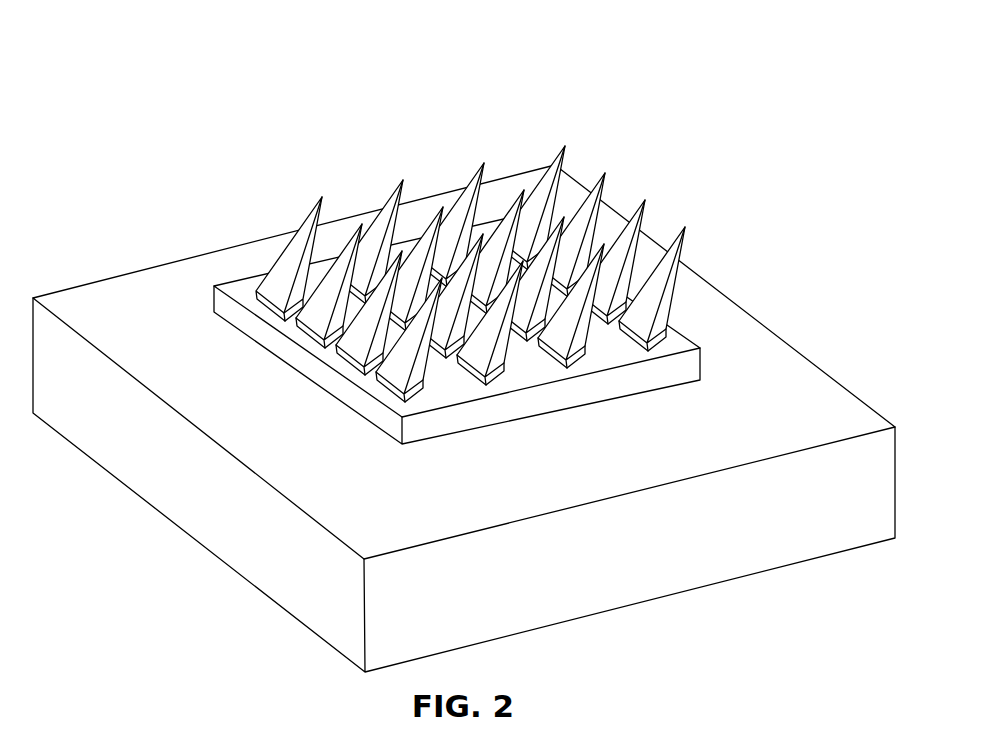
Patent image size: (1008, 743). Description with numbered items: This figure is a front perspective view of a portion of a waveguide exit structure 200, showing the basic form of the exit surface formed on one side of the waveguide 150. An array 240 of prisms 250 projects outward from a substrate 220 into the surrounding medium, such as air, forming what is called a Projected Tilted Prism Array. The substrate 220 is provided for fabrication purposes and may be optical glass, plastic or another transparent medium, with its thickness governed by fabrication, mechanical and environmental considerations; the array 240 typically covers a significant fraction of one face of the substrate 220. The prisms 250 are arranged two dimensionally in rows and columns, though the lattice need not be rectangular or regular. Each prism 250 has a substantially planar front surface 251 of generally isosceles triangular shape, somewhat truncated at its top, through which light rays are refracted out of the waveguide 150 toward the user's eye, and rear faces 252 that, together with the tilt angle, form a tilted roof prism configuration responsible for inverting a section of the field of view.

The exit structure 200 is at (133, 107).
The waveguide 150 is at (588, 560).
The substrate 220 is at (537, 407).
The array of prisms 240 is at (232, 112).
The prism 250 is at (316, 220).
The prism front surface 251 is at (290, 268).
The rear face 252 is at (302, 282).